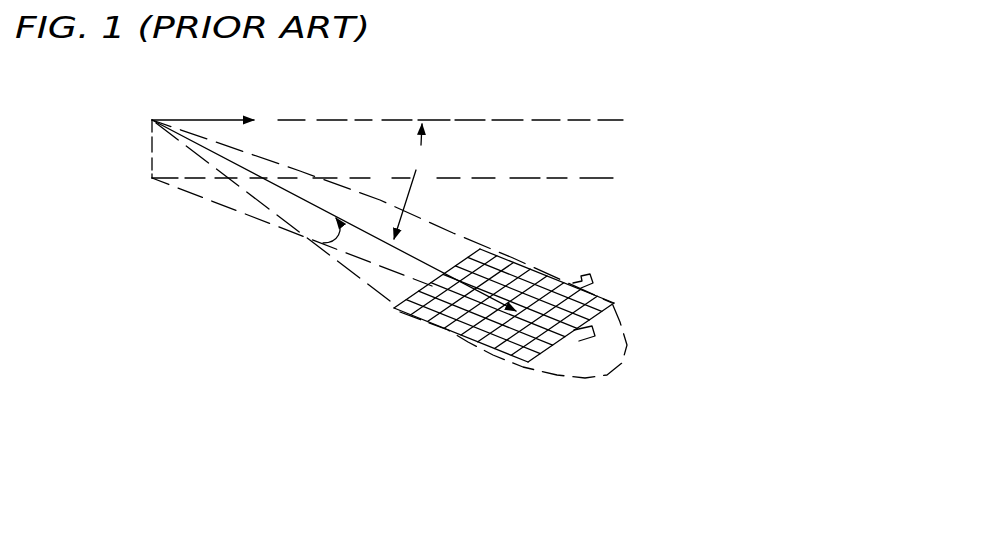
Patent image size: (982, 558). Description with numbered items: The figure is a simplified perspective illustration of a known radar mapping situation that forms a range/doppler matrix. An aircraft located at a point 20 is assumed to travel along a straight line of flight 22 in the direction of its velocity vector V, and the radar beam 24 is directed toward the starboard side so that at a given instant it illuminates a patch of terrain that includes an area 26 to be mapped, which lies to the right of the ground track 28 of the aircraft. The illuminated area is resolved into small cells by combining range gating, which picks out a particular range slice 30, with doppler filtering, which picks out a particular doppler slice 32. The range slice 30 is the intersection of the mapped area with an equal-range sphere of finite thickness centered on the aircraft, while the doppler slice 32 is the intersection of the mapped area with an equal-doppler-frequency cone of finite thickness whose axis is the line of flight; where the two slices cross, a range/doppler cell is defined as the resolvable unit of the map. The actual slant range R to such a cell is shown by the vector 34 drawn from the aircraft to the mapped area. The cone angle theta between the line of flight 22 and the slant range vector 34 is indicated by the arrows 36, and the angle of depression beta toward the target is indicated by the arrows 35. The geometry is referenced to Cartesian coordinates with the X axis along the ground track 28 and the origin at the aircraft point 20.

The point 20 is at (152, 121).
The line of flight 22 is at (355, 122).
The radar beam 24 is at (645, 342).
The area to be mapped 26 is at (396, 312).
The ground track 28 is at (487, 183).
The range slice 30 is at (610, 258).
The doppler slice 32 is at (588, 337).
The slant range vector 34 is at (410, 242).
The arrows 35 is at (333, 250).
The arrows 36 is at (410, 197).